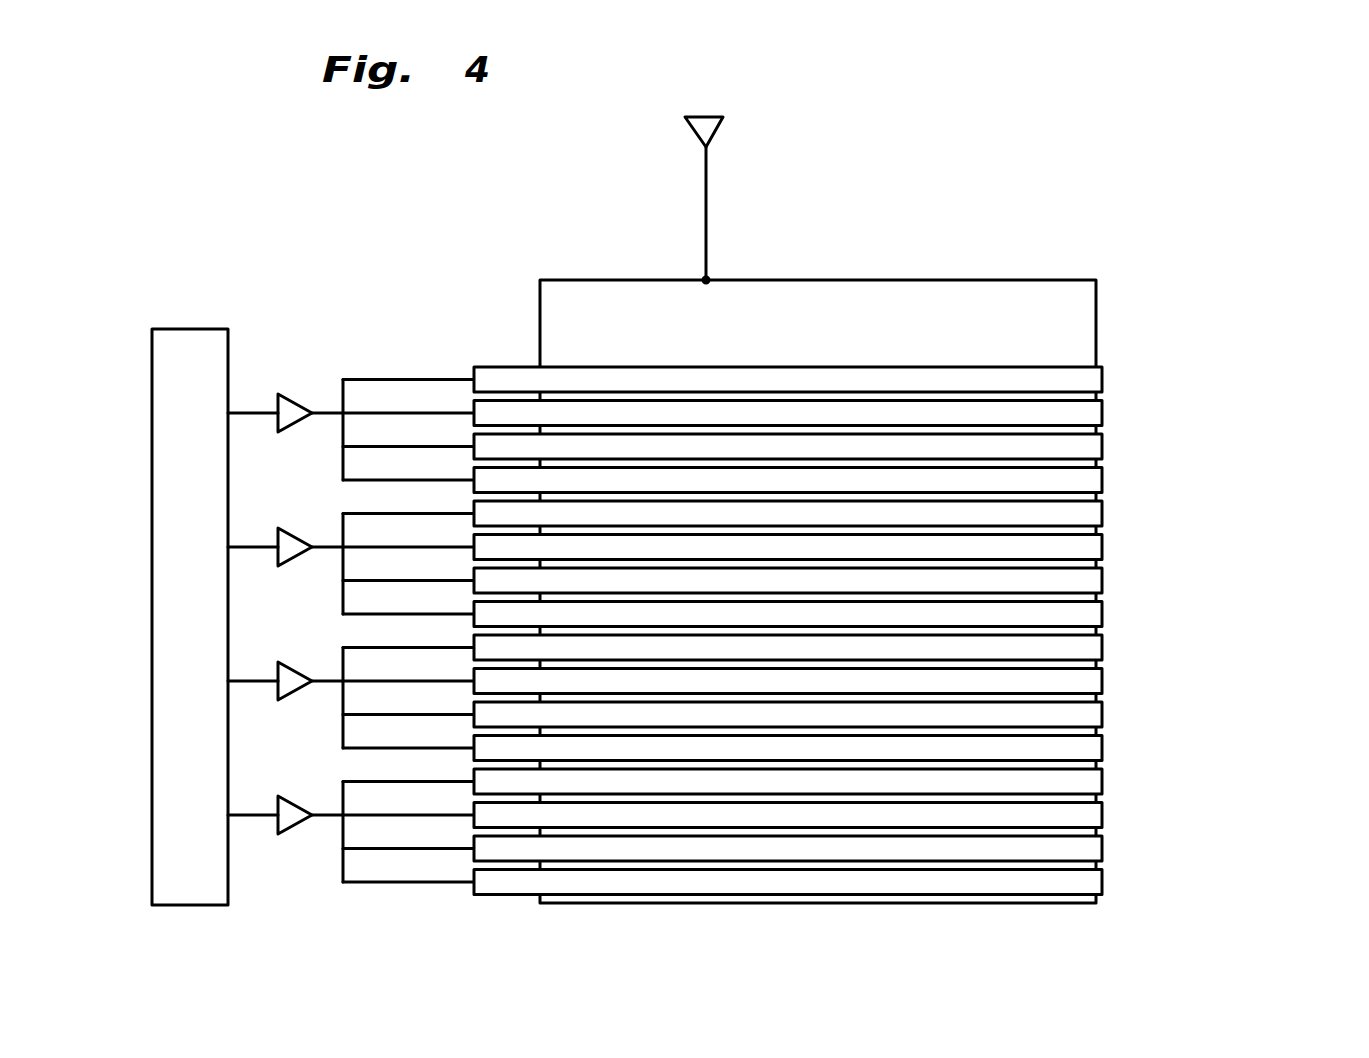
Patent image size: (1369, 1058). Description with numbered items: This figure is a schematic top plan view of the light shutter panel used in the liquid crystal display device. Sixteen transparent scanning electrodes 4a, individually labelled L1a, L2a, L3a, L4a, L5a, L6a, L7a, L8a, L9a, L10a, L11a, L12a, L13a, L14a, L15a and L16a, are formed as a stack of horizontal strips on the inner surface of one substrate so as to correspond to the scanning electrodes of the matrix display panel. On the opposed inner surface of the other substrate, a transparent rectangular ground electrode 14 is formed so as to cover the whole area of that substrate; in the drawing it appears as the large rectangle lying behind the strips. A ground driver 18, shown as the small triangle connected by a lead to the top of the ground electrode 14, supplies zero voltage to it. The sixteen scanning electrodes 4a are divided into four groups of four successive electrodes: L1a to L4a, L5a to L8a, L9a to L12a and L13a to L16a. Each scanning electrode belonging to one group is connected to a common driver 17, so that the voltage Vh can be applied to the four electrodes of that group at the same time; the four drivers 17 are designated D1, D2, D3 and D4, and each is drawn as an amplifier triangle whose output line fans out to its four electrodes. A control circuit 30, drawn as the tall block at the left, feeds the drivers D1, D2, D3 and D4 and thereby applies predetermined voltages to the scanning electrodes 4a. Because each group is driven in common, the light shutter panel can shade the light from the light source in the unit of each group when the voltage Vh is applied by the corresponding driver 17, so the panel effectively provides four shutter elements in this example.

The control circuit 30 is at (190, 329).
The ground electrode 14 is at (552, 306).
The ground driver 18 is at (720, 125).
The driver 17 is at (351, 386).
The driver D1 is at (351, 430).
The driver D2 is at (351, 564).
The driver D3 is at (351, 698).
The driver D4 is at (351, 832).
The scanning electrodes 4a is at (888, 641).
The scanning electrode L1a is at (1102, 380).
The scanning electrode L2a is at (1102, 413).
The scanning electrode L3a is at (1102, 446).
The scanning electrode L4a is at (1102, 480).
The scanning electrode L5a is at (1102, 514).
The scanning electrode L6a is at (1102, 547).
The scanning electrode L7a is at (1102, 580).
The scanning electrode L8a is at (1102, 614).
The scanning electrode L9a is at (1102, 648).
The scanning electrode L10a is at (1102, 681).
The scanning electrode L11a is at (1102, 714).
The scanning electrode L12a is at (1102, 748).
The scanning electrode L13a is at (1102, 782).
The scanning electrode L14a is at (1102, 815).
The scanning electrode L15a is at (1102, 848).
The scanning electrode L16a is at (844, 893).